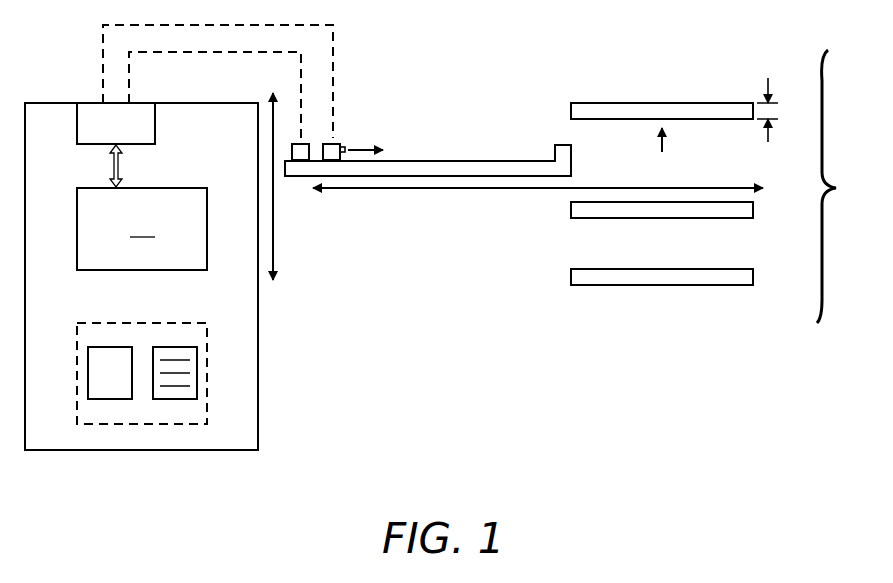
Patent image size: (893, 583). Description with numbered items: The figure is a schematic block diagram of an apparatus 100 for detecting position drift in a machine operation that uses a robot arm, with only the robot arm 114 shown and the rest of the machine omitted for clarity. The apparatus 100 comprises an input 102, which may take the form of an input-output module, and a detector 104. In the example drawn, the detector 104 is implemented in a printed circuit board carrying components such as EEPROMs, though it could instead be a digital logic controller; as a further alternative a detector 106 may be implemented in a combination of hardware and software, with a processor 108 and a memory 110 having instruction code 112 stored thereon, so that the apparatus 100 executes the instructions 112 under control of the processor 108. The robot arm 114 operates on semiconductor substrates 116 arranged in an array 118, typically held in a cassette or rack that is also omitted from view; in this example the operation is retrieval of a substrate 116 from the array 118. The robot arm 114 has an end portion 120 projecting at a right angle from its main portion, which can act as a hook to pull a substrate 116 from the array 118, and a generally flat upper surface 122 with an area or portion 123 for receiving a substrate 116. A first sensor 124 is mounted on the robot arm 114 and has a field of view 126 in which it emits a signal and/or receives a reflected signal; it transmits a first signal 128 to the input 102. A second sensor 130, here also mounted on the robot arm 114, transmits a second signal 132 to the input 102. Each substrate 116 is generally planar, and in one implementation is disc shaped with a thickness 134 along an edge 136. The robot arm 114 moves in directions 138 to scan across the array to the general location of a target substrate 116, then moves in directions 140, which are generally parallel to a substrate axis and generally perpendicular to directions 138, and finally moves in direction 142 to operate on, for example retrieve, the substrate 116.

The apparatus 100 is at (258, 372).
The input 102 is at (155, 125).
The detector 104 is at (142, 229).
The detector 106 is at (145, 323).
The processor 108 is at (108, 347).
The memory 110 is at (178, 347).
The instruction code 112 is at (183, 373).
The robot arm 114 is at (298, 176).
The semiconductor substrate 116 is at (660, 103).
The array 118 is at (843, 186).
The end portion 120 is at (556, 150).
The upper surface 122 is at (400, 156).
The area or portion 123 is at (458, 161).
The first sensor 124 is at (333, 144).
The field of view 126 is at (362, 148).
The first signal 128 is at (333, 30).
The second sensor 130 is at (299, 144).
The second signal 132 is at (210, 52).
The thickness 134 is at (784, 110).
The edge 136 is at (571, 106).
The directions 138 is at (273, 240).
The directions 140 is at (603, 188).
The direction 142 is at (664, 146).